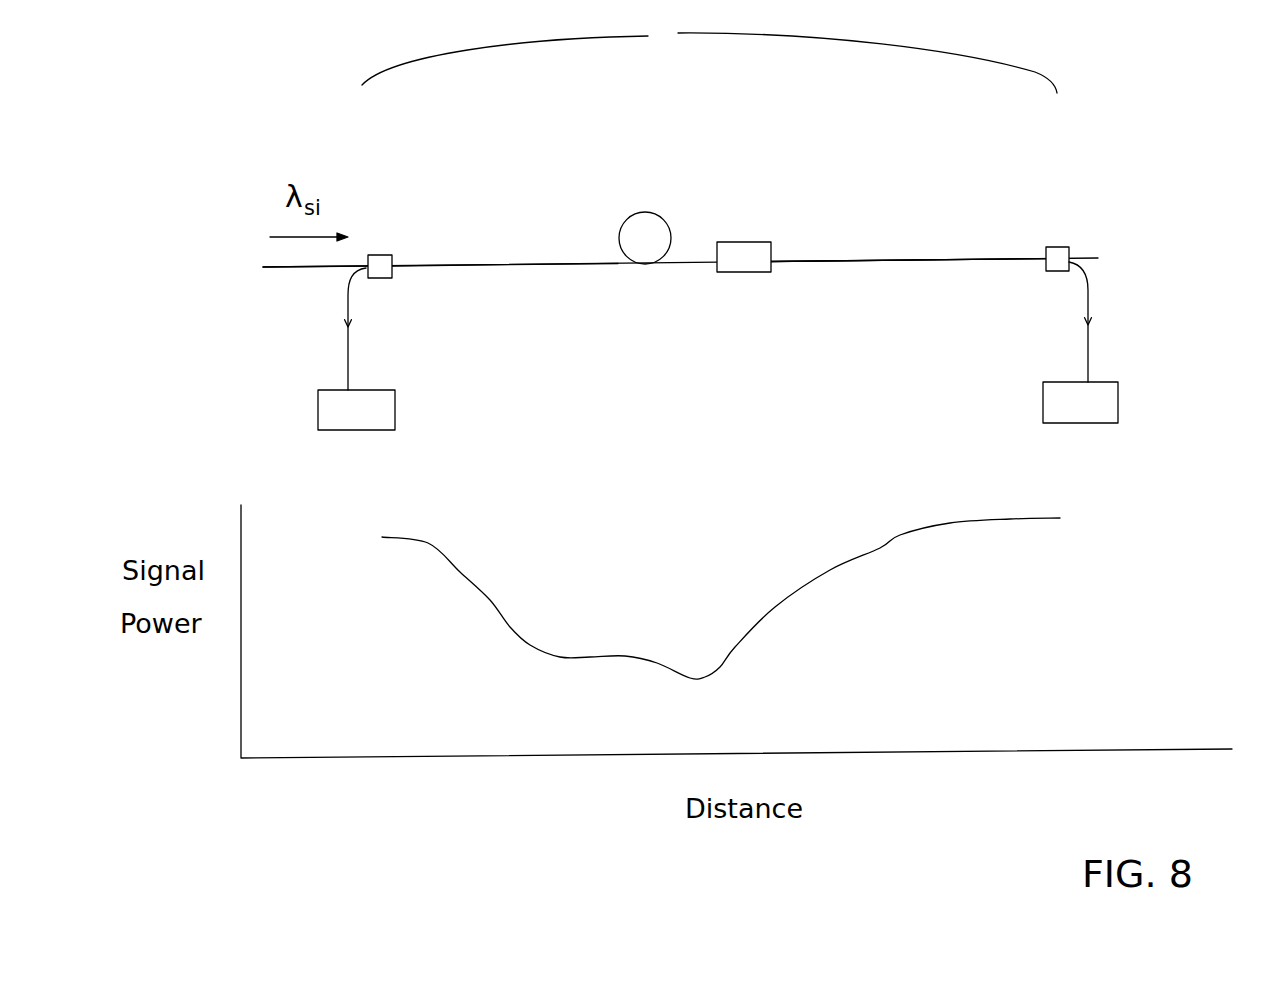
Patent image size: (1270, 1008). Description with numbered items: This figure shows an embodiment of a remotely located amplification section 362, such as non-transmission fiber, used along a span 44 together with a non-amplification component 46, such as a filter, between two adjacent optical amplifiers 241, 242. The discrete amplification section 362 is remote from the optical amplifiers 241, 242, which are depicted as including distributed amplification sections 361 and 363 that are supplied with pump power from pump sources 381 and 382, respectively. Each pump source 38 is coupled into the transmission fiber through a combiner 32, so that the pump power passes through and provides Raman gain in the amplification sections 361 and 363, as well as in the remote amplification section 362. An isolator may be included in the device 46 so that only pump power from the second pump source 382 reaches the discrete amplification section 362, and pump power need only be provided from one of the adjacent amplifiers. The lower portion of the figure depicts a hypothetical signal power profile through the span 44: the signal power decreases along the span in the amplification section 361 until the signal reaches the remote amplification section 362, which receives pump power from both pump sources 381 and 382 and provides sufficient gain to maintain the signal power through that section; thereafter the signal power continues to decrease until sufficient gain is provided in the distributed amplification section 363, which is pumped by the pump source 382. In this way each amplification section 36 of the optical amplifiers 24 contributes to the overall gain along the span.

The optical amplifier 24 is at (669, 171).
The first optical amplifier 241 is at (340, 131).
The second optical amplifier 242 is at (1031, 171).
The combiner 32 is at (392, 278).
The amplification section 36 is at (719, 186).
The first distributed amplification section 361 is at (427, 218).
The remote discrete amplification section 362 is at (673, 185).
The third distributed amplification section 363 is at (903, 213).
The pump source 38 is at (769, 346).
The first pump source 381 is at (395, 409).
The second pump source 382 is at (1118, 397).
The span 44 is at (709, 53).
The non-amplification component 46 is at (745, 242).